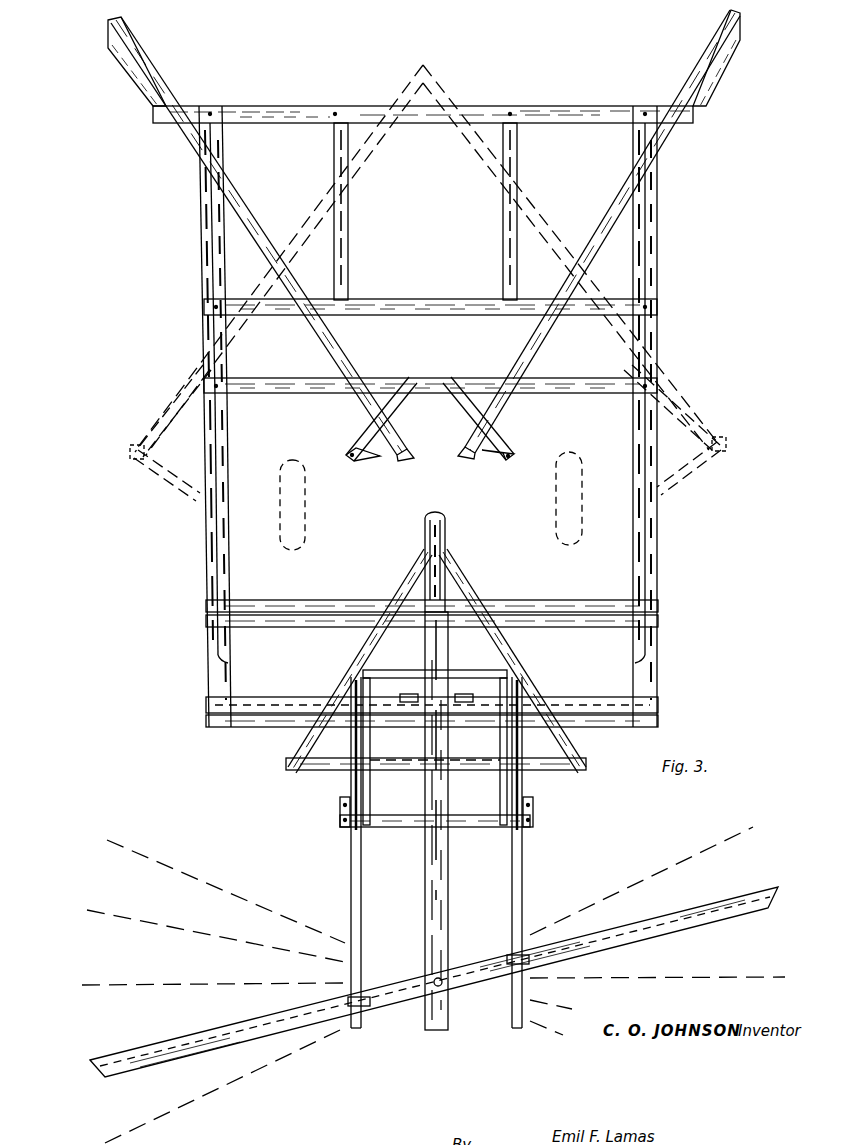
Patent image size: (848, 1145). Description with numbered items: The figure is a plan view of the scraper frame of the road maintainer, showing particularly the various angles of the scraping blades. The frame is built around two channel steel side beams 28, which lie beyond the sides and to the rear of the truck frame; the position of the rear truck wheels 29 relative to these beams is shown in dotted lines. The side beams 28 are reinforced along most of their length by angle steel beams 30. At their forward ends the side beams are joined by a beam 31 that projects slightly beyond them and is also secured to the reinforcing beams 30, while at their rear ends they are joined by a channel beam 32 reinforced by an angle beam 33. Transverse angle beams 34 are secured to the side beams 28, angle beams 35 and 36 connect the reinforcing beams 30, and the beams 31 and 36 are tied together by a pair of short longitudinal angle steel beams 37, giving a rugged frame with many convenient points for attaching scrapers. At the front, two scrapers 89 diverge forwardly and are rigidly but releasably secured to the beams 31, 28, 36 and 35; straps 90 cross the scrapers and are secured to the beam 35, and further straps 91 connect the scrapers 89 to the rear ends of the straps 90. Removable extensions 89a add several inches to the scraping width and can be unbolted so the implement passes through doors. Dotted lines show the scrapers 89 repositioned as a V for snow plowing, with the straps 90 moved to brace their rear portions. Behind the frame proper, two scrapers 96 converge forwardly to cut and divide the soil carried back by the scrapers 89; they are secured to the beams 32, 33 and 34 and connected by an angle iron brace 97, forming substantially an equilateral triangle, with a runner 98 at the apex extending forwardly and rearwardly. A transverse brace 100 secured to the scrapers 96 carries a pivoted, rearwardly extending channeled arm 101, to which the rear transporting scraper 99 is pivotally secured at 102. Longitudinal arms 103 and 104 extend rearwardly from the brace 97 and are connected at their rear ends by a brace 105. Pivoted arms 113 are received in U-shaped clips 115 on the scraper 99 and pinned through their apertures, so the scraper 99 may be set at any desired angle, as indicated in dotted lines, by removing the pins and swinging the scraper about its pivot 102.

The side beams 28 is at (208, 290).
The rear truck wheels 29 is at (290, 502).
The angle steel beams 30 is at (229, 438).
The beam 31 is at (282, 112).
The channel beam 32 is at (295, 703).
The angle beam 33 is at (235, 727).
The transverse angle beams 34 is at (295, 600).
The angle beam 35 is at (435, 380).
The angle beam 36 is at (412, 313).
The longitudinal angle steel beams 37 is at (348, 233).
The scrapers 89 is at (303, 223).
The extensions 89a is at (140, 75).
The straps 90 is at (170, 465).
The straps 91 is at (375, 456).
The scrapers 96 is at (408, 590).
The angle iron brace 97 is at (320, 771).
The runner 98 is at (428, 535).
The rear scraper 99 is at (280, 1025).
The transverse brace 100 is at (400, 672).
The arm 101 is at (432, 890).
The pivot 102 is at (442, 986).
The arm 103 is at (345, 808).
The arm 104 is at (367, 788).
The brace 105 is at (470, 827).
The arms 113 is at (351, 905).
The U-shaped clips 115 is at (507, 952).